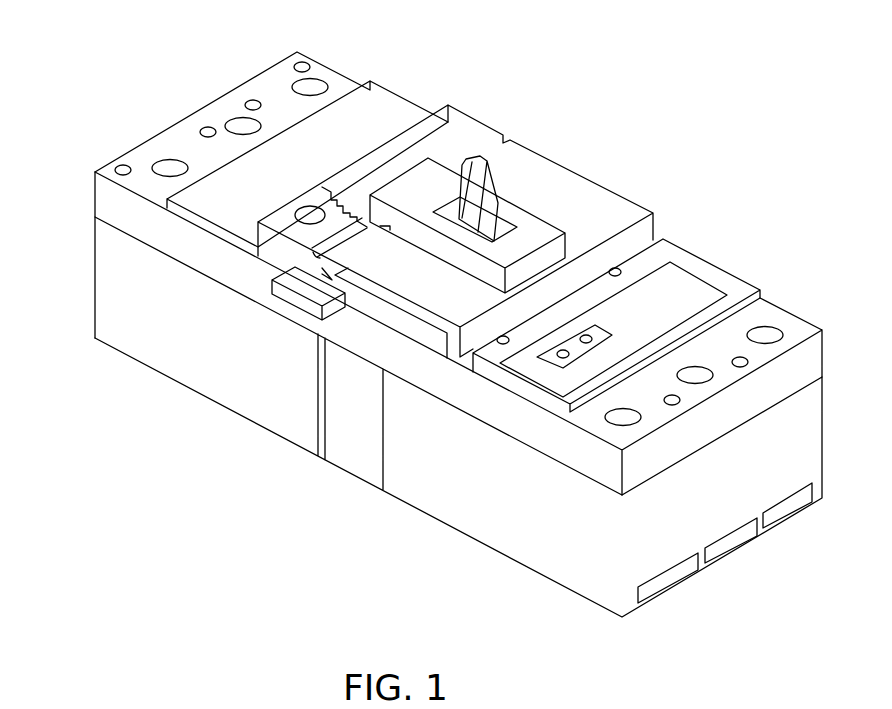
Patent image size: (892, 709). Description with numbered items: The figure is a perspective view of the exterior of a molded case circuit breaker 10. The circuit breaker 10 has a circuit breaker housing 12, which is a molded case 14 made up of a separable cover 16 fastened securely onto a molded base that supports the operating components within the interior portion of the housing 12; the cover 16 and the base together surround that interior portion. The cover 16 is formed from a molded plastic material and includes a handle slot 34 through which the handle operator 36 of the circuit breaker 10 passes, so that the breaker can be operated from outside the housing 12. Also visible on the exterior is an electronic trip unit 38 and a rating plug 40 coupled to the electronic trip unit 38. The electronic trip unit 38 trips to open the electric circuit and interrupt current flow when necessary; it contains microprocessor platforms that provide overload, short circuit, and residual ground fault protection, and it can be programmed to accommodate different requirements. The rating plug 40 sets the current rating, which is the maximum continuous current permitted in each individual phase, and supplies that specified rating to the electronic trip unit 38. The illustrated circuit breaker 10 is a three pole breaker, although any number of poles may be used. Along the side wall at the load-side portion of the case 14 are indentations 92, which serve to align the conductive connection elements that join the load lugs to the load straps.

The molded case circuit breaker 10 is at (466, 132).
The circuit breaker housing 12 is at (88, 172).
The molded case 14 is at (162, 347).
The separable cover 16 is at (248, 270).
The handle slot 34 is at (512, 218).
The handle operator 36 is at (480, 174).
The electronic trip unit 38 is at (688, 285).
The rating plug 40 is at (549, 364).
The indentations 92 is at (670, 578).